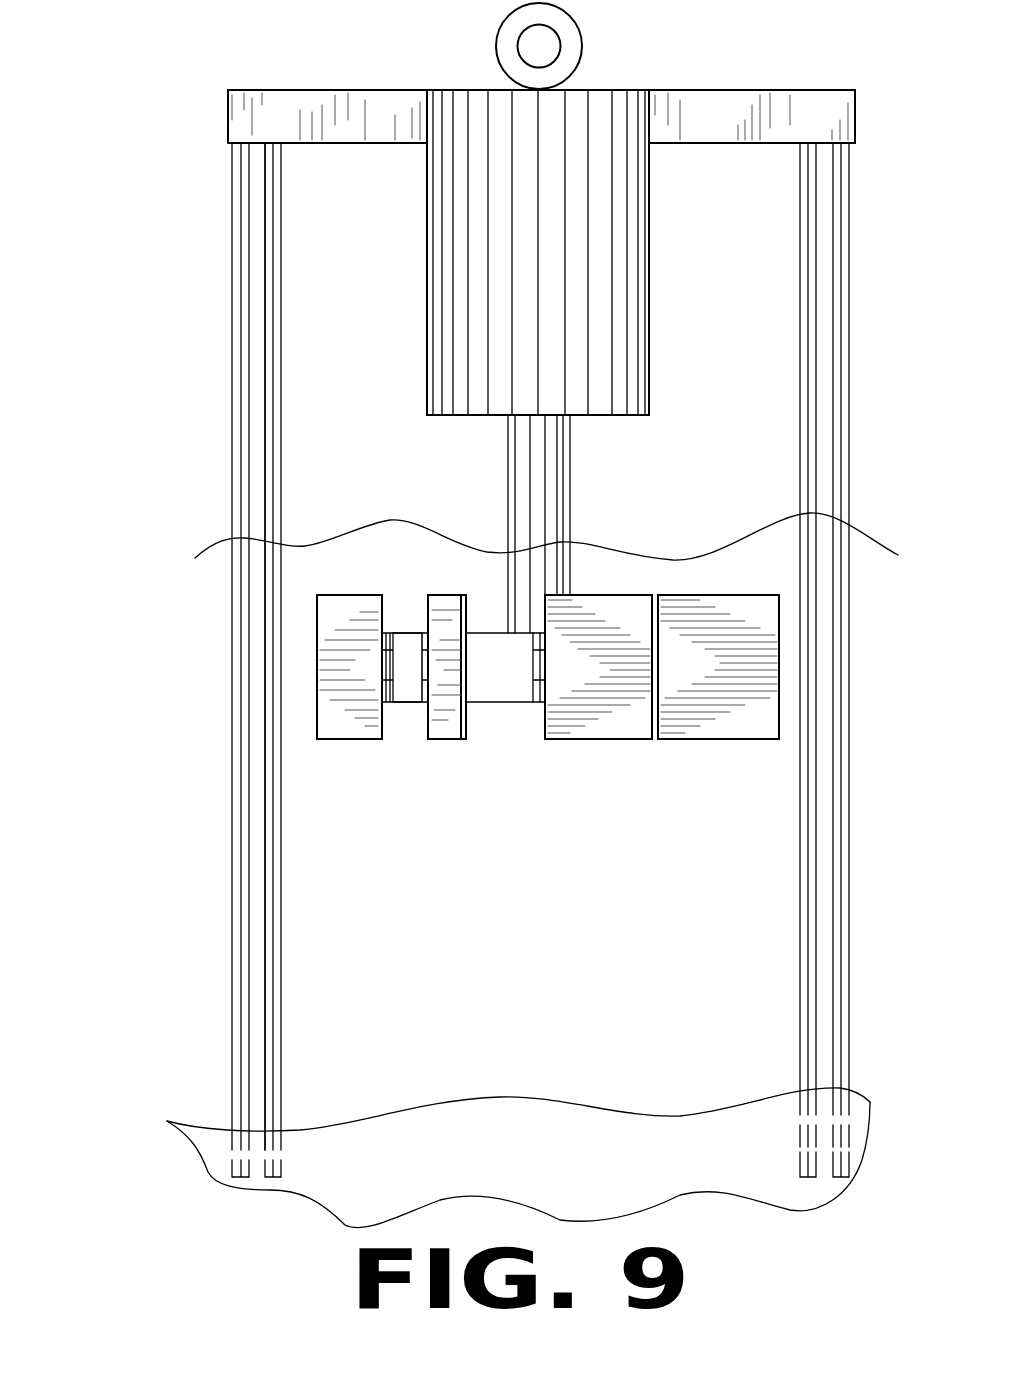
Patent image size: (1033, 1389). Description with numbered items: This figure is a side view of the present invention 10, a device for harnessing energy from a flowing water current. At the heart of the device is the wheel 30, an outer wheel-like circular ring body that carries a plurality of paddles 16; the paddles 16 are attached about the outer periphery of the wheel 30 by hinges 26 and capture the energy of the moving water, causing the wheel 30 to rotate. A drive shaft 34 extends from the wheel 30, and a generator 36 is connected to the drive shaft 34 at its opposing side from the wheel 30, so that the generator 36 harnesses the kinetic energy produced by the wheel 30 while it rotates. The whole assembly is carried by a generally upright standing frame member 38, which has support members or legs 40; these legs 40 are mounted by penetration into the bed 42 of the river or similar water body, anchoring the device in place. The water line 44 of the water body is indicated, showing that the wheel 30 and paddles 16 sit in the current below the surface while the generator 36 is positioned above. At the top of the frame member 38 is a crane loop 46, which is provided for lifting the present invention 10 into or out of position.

The present invention 10 is at (750, 503).
The paddles 16 is at (317, 627).
The hinges 26 is at (535, 707).
The wheel 30 is at (407, 699).
The drive shaft 34 is at (563, 483).
The generator 36 is at (425, 262).
The frame member 38 is at (218, 347).
The legs 40 is at (236, 1000).
The bed 42 is at (483, 1098).
The water line 44 is at (222, 547).
The crane loop 46 is at (497, 43).